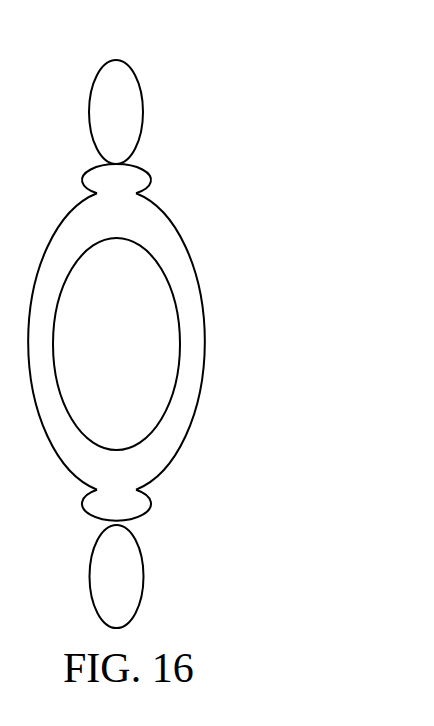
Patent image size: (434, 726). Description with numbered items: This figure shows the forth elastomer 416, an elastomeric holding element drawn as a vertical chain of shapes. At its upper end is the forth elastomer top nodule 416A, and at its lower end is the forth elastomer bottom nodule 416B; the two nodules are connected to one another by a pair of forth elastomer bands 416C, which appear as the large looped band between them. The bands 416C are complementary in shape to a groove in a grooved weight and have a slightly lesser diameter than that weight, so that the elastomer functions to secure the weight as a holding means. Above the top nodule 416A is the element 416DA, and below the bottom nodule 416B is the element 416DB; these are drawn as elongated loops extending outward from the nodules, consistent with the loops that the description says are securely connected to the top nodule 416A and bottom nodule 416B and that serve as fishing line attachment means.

The forth elastomer 416 is at (141, 47).
The upper disc portion 416DA is at (143, 115).
The forth elastomer top nodule 416A is at (151, 183).
The forth elastomer bands 416C is at (187, 343).
The forth elastomer bottom nodule 416B is at (151, 507).
The lower disc portion 416DB is at (143, 577).